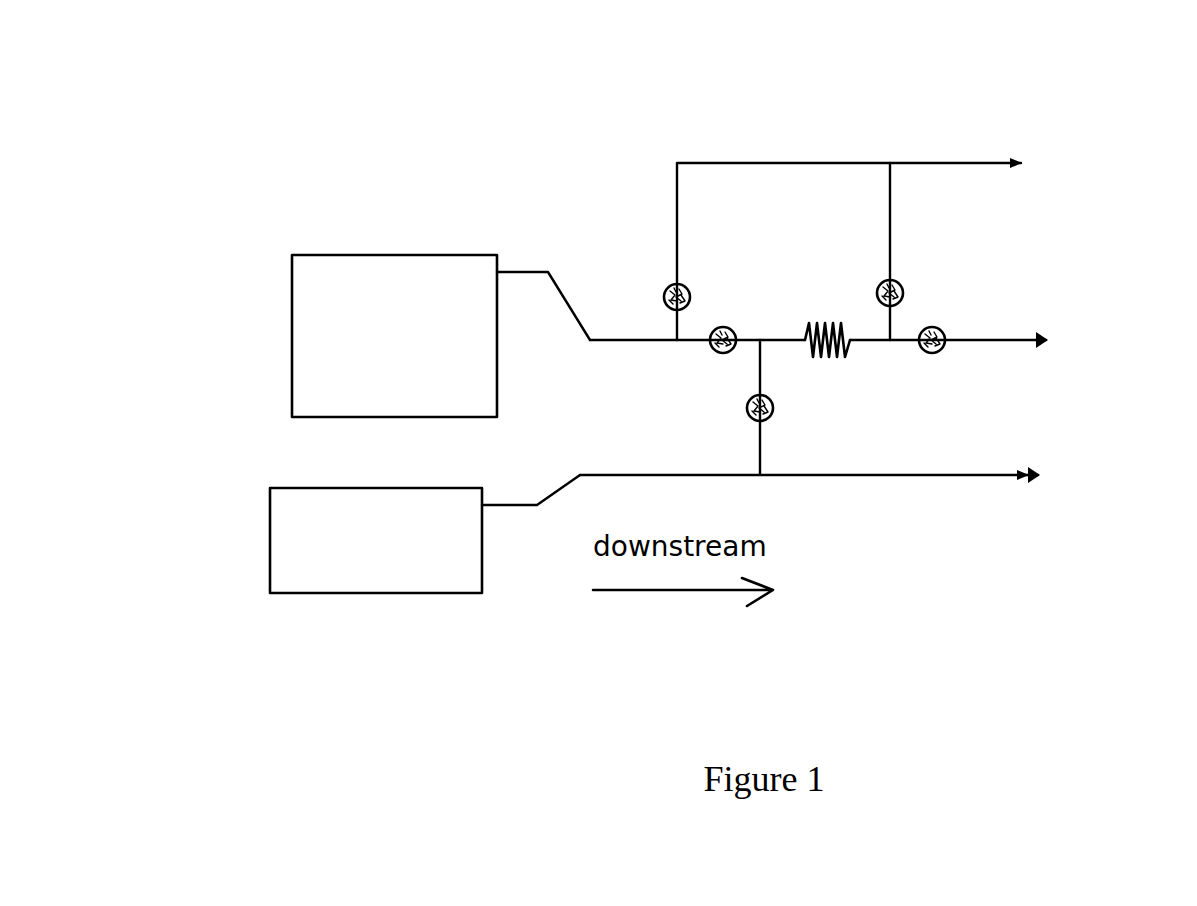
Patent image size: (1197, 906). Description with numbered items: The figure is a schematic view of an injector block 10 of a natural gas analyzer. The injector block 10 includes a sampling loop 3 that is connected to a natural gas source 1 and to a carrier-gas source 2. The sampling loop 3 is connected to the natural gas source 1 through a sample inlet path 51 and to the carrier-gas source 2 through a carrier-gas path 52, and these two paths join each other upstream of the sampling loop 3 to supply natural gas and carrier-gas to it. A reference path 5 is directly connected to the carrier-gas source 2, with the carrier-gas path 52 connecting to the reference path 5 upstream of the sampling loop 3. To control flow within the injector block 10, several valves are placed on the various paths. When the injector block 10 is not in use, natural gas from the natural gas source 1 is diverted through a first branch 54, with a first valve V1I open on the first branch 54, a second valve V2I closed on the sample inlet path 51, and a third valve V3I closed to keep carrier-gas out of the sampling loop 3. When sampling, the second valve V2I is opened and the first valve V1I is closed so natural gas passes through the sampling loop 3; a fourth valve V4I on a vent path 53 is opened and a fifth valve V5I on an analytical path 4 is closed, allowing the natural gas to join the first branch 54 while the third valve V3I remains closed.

The injector block 10 is at (790, 94).
The natural gas source 1 is at (441, 311).
The carrier-gas source 2 is at (425, 560).
The sampling loop 3 is at (862, 358).
The analytical path 4 is at (1056, 324).
The reference path 5 is at (996, 464).
The sample inlet path 51 is at (692, 337).
The carrier-gas path 52 is at (762, 448).
The vent path 53 is at (888, 185).
The first branch 54 is at (699, 163).
The first valve V1I is at (664, 294).
The second valve V2I is at (714, 353).
The third valve V3I is at (750, 419).
The fourth valve V4I is at (900, 282).
The fifth valve V5I is at (944, 330).